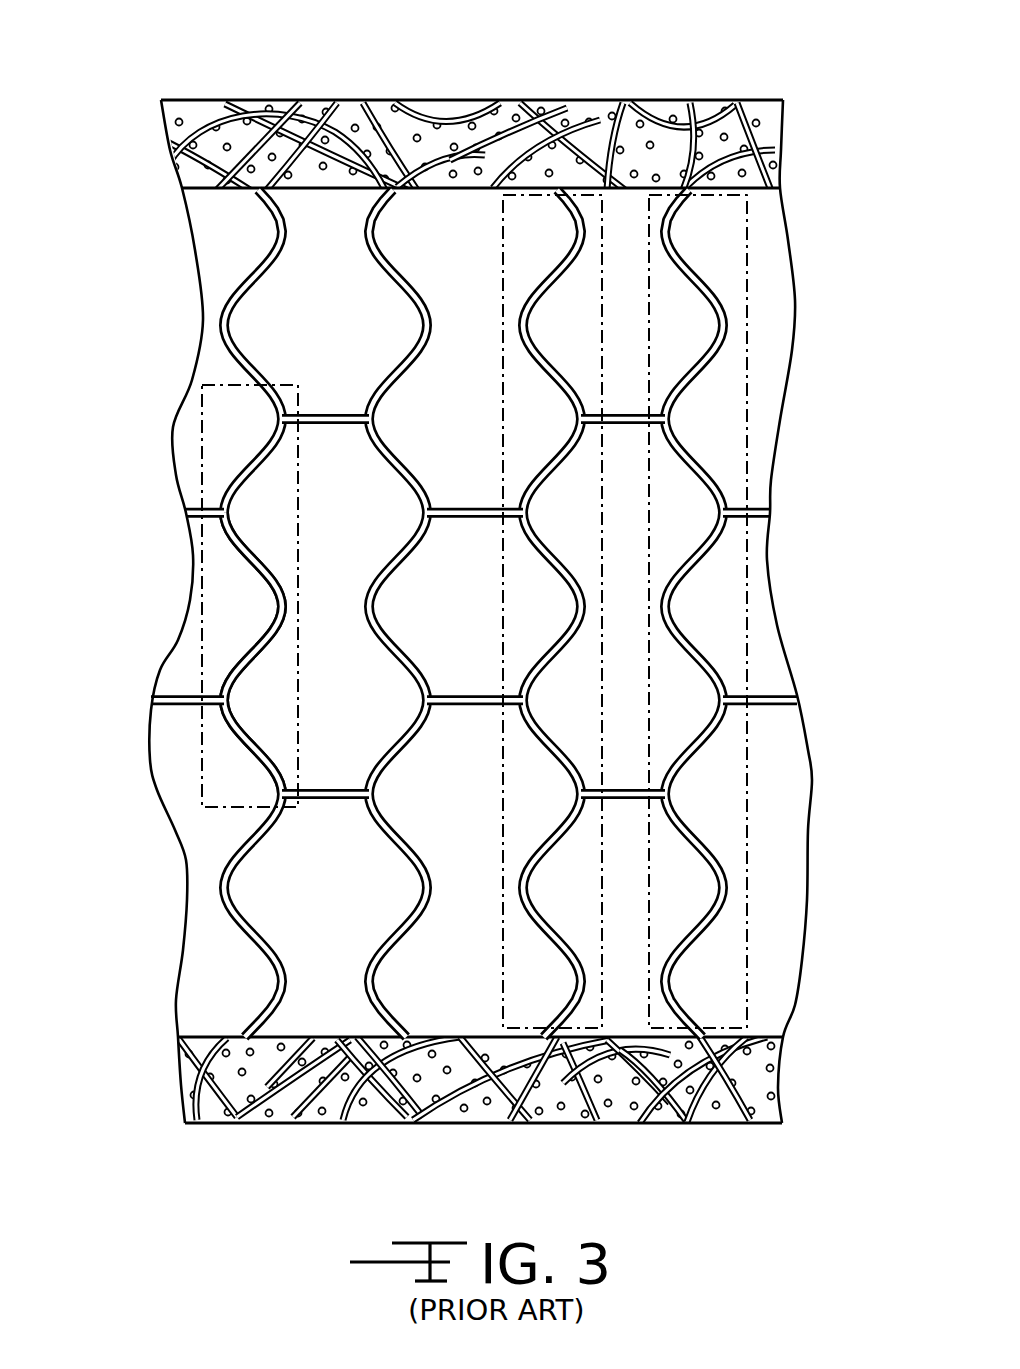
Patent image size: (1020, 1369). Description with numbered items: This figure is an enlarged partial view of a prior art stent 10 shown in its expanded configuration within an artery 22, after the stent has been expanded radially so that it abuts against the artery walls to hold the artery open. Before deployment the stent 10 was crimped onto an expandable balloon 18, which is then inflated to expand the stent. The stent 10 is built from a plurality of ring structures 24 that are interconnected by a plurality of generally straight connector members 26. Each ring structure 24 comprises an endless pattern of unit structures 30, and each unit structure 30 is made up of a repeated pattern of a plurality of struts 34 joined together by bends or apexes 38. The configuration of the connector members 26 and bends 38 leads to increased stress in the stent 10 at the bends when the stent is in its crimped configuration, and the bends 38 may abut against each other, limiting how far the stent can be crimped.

The stent 10 is at (190, 70).
The expandable balloon 18 is at (478, 218).
The artery 22 is at (358, 135).
The ring structure 24 is at (748, 625).
The connector member 26 is at (625, 800).
The unit structure 30 is at (202, 623).
The strut 34 is at (225, 547).
The bend 38 is at (277, 590).